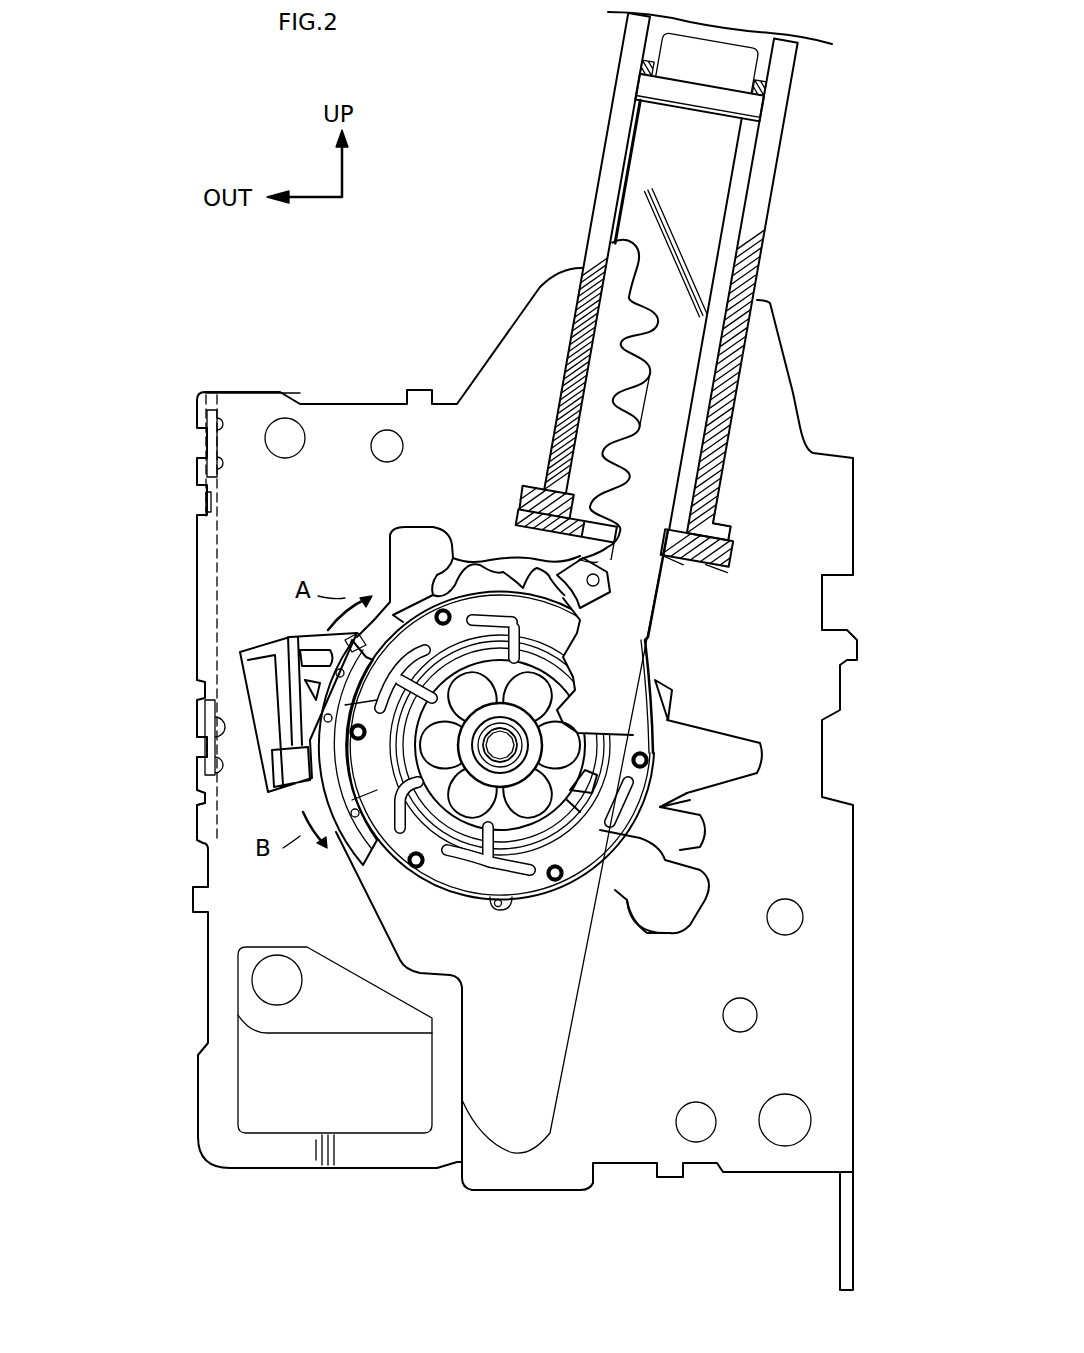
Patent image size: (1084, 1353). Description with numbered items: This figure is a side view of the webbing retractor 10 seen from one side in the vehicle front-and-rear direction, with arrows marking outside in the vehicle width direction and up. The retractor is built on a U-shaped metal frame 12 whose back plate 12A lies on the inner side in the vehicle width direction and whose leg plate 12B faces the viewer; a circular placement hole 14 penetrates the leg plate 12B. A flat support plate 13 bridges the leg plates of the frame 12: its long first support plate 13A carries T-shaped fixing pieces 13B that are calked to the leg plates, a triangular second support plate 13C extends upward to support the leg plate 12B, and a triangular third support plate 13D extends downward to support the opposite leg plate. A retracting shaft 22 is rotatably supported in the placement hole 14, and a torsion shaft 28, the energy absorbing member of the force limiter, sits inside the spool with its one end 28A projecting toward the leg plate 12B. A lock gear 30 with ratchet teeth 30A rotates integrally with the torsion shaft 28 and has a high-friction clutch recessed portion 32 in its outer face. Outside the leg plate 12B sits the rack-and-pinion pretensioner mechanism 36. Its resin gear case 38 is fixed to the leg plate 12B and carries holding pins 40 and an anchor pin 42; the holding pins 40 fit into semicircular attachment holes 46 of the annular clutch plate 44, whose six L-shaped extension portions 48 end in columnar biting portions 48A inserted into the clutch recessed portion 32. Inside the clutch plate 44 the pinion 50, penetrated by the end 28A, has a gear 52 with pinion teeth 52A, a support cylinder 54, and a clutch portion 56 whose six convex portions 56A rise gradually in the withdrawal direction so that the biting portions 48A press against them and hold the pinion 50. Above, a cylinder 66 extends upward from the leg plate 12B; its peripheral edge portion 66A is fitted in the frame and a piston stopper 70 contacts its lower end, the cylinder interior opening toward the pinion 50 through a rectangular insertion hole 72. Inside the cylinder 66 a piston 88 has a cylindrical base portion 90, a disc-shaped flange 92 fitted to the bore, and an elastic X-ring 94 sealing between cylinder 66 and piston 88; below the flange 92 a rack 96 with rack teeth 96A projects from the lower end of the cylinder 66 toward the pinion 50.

The webbing retractor 10 is at (378, 335).
The frame 12 is at (492, 370).
The back plate 12A is at (840, 1212).
The leg plate 12B is at (330, 400).
The support plate 13 is at (205, 688).
The first support plate 13A is at (205, 752).
The fixing pieces 13B is at (205, 445).
The second support plate 13C is at (200, 505).
The third support plate 13D is at (205, 800).
The placement hole 14 is at (478, 560).
The retracting shaft 22 is at (426, 577).
The torsion shaft 28 is at (561, 856).
The one end of torsion shaft 28A is at (503, 760).
The lock gear 30 is at (660, 840).
The ratchet teeth 30A is at (640, 915).
The clutch recessed portion 32 is at (460, 835).
The pretensioner mechanism 36 is at (760, 655).
The gear case 38 is at (290, 640).
The holding pins 40 is at (690, 720).
The anchor pin 42 is at (618, 590).
The clutch plate 44 is at (513, 582).
The attachment holes 46 is at (410, 866).
The extension portions 48 is at (405, 862).
The biting portions 48A is at (390, 777).
The pinion 50 is at (457, 612).
The gear 52 is at (630, 642).
The pinion teeth 52A is at (690, 797).
The support cylinder 54 is at (620, 812).
The clutch portion 56 is at (690, 878).
The convex portions 56A is at (572, 806).
The cylinder 66 is at (598, 203).
The peripheral edge portion 66A is at (738, 522).
The piston stopper 70 is at (748, 558).
The insertion hole 72 is at (705, 575).
The piston 88 is at (645, 162).
The base portion 90 is at (655, 42).
The flange 92 is at (640, 78).
The X-ring 94 is at (643, 60).
The rack 96 is at (616, 246).
The rack teeth 96A is at (622, 338).